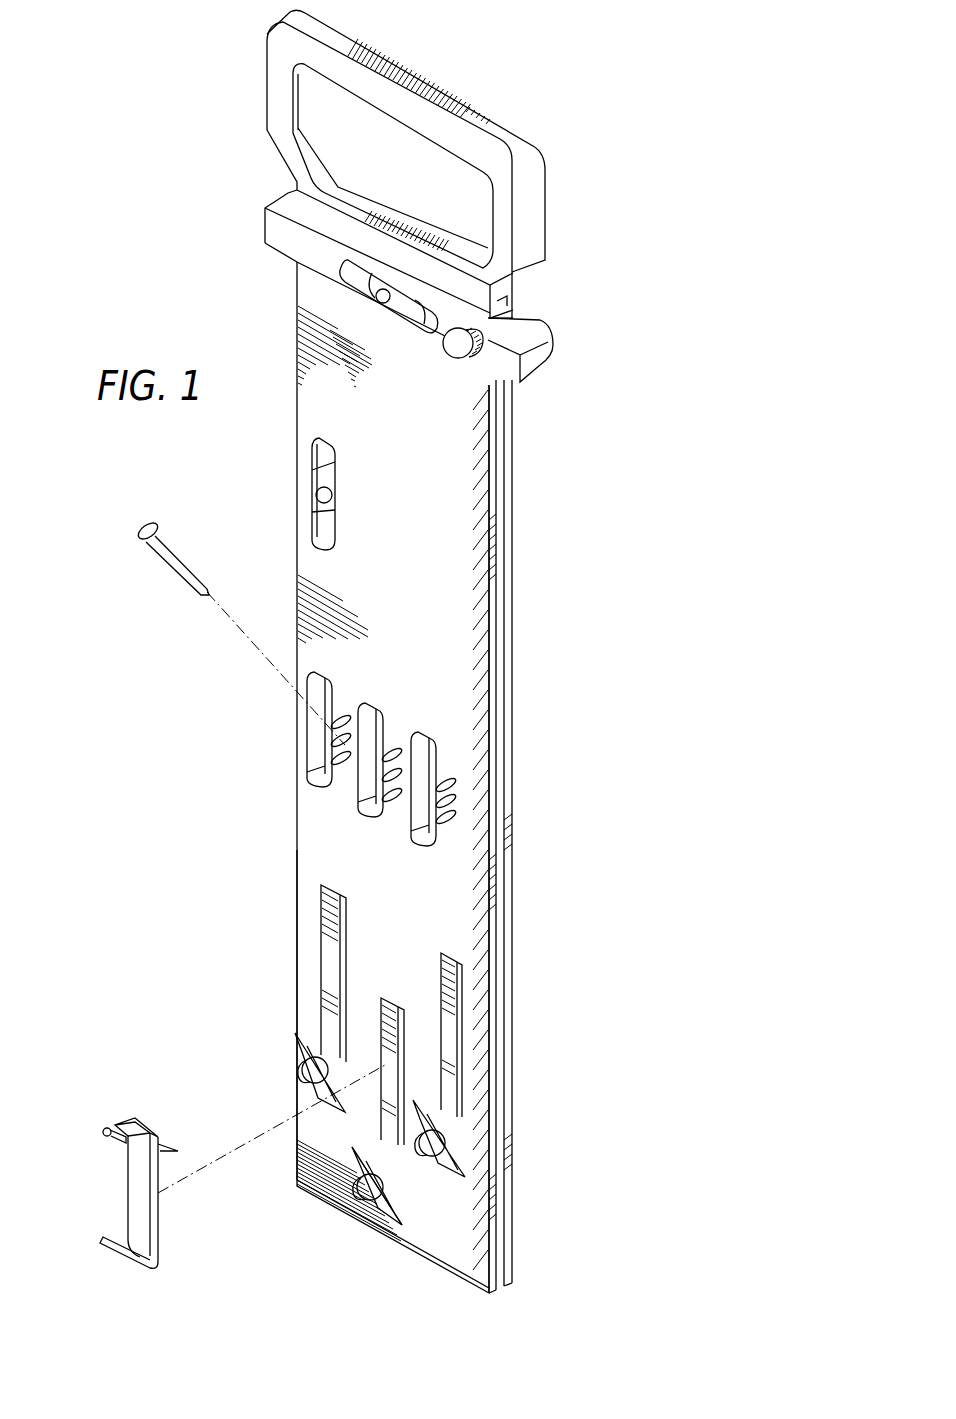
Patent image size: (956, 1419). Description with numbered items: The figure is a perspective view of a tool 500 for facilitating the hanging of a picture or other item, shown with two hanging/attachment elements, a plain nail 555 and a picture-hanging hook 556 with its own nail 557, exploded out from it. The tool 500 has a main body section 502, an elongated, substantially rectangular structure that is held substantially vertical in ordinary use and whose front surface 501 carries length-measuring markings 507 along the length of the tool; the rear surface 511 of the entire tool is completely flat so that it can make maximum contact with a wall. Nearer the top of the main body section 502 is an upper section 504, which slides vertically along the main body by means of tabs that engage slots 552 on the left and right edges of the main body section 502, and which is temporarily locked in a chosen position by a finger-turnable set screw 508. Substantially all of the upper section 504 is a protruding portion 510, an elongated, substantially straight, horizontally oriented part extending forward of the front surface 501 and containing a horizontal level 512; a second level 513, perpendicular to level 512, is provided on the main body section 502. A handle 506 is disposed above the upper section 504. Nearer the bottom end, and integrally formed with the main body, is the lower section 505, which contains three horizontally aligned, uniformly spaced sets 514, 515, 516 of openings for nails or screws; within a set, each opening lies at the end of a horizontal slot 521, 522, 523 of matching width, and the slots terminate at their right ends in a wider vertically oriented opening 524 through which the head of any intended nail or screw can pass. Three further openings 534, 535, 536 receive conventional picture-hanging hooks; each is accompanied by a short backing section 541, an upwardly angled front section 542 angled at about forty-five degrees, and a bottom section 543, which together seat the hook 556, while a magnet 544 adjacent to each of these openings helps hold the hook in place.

The tool 500 is at (598, 158).
The front surface 501 is at (300, 645).
The main body section 502 is at (322, 413).
The upper section 504 is at (532, 340).
The lower section 505 is at (332, 840).
The handle 506 is at (407, 78).
The length-measuring markings 507 is at (478, 512).
The set screw 508 is at (455, 352).
The protruding portion 510 is at (293, 238).
The rear surface 511 is at (512, 795).
The level 512 is at (413, 308).
The level 513 is at (322, 463).
The set of openings 514 is at (320, 674).
The set of openings 515 is at (368, 708).
The set of openings 516 is at (423, 737).
The horizontal slot 521 is at (392, 752).
The horizontal slot 522 is at (390, 780).
The horizontal slot 523 is at (387, 787).
The vertically oriented opening 524 is at (360, 757).
The opening 534 is at (332, 912).
The opening 535 is at (387, 1016).
The opening 536 is at (455, 970).
The backing section 541 is at (292, 1155).
The upwardly angled front section 542 is at (397, 1186).
The bottom section 543 is at (300, 1046).
The magnet 544 is at (305, 1070).
The slots 552 is at (498, 604).
The nail 555 is at (178, 566).
The picture-hanging hook 556 is at (137, 1192).
The nail 557 is at (105, 1130).